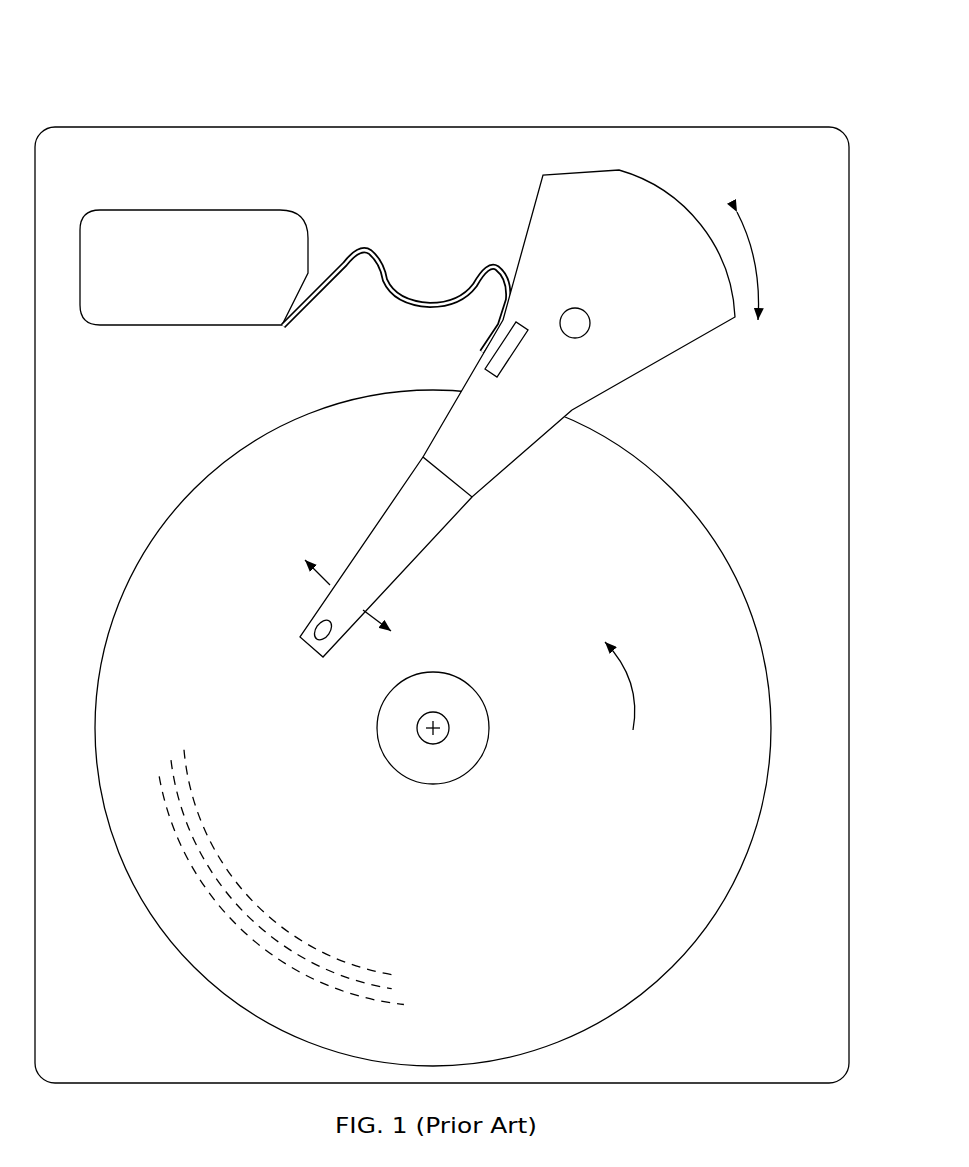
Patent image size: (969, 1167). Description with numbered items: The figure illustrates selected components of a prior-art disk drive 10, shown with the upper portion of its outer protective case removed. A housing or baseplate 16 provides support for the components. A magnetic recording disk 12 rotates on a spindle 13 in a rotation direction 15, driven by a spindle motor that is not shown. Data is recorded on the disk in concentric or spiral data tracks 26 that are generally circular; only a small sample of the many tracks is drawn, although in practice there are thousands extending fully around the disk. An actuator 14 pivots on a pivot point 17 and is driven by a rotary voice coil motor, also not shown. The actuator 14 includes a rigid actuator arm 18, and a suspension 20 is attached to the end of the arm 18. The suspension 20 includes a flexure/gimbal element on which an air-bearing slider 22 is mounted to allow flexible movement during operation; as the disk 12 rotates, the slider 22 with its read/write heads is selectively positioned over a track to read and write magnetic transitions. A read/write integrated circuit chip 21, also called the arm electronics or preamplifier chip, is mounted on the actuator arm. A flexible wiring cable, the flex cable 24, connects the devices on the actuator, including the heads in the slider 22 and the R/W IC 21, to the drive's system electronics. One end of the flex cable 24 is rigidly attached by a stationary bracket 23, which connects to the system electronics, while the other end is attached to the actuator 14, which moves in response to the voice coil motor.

The disk drive 10 is at (224, 108).
The magnetic recording disk 12 is at (683, 497).
The spindle 13 is at (448, 732).
The actuator 14 is at (687, 206).
The direction 15 is at (670, 685).
The baseplate 16 is at (698, 127).
The pivot point 17 is at (573, 313).
The actuator arm 18 is at (520, 443).
The suspension 20 is at (378, 530).
The read/write integrated circuit chip 21 is at (513, 353).
The slider 22 is at (308, 650).
The stationary bracket 23 is at (182, 217).
The flex cable 24 is at (452, 282).
The data tracks 26 is at (390, 990).